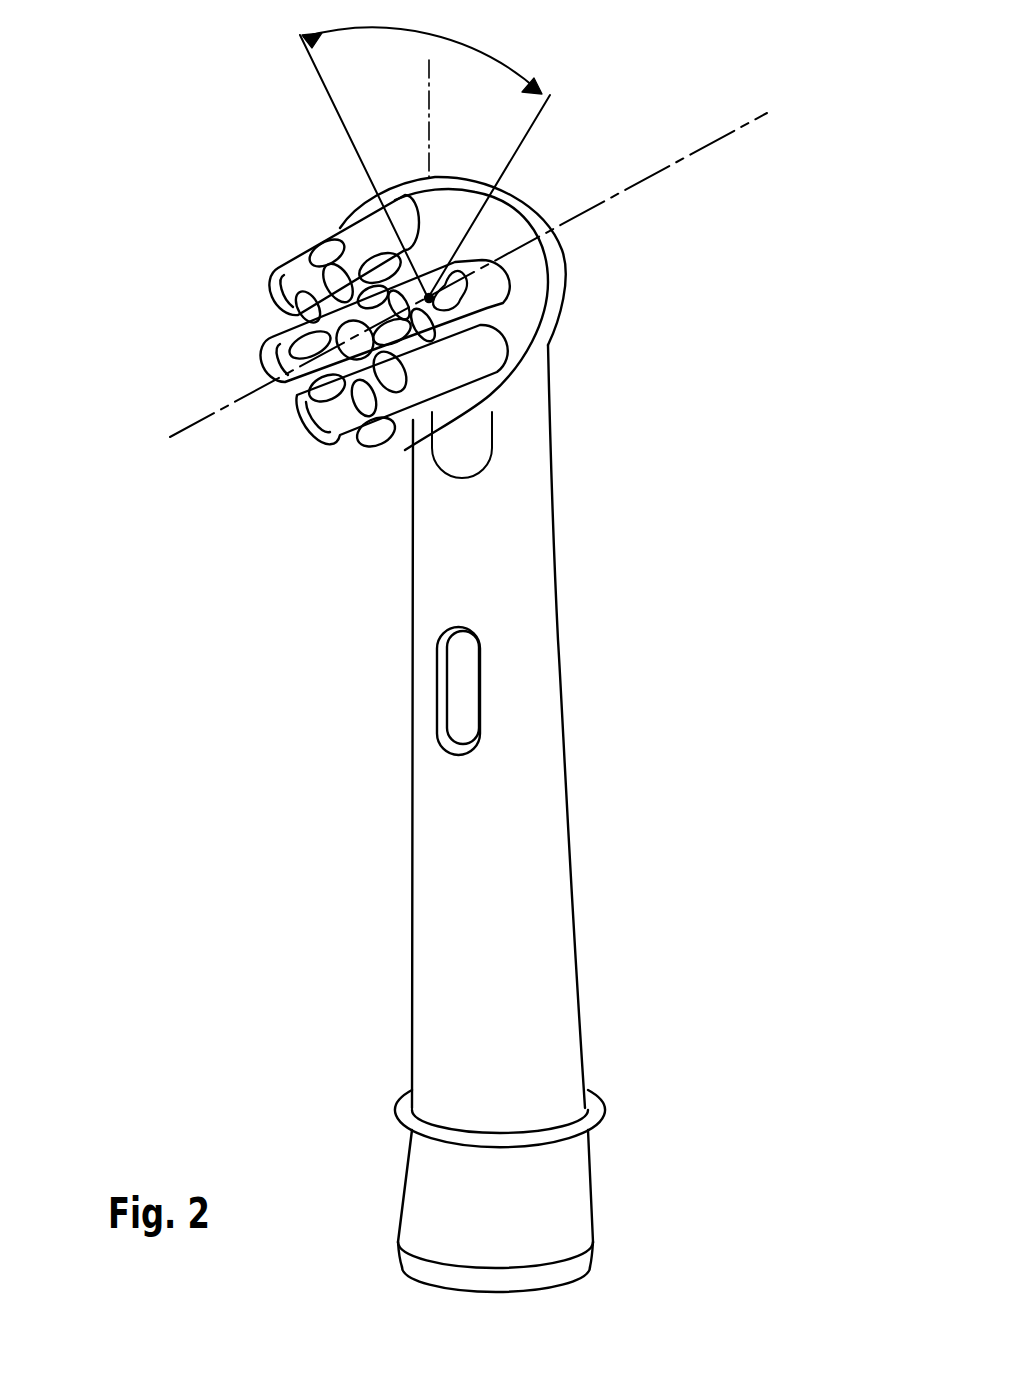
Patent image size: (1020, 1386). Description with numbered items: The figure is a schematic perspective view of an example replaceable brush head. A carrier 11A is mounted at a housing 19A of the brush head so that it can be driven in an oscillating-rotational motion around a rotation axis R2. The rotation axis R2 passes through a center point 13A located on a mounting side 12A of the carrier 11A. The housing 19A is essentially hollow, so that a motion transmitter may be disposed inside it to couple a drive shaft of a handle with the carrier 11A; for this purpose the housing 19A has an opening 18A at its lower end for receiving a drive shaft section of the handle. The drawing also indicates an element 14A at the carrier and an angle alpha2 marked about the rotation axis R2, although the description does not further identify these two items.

The carrier 11A is at (520, 266).
The mounting side 12A is at (490, 430).
The center point 13A is at (505, 303).
The bristle tufts 14A is at (248, 277).
The opening 18A is at (546, 1318).
The housing 19A is at (543, 865).
The rotation axis R2 is at (707, 140).
The pivot angle alpha2 is at (425, 149).